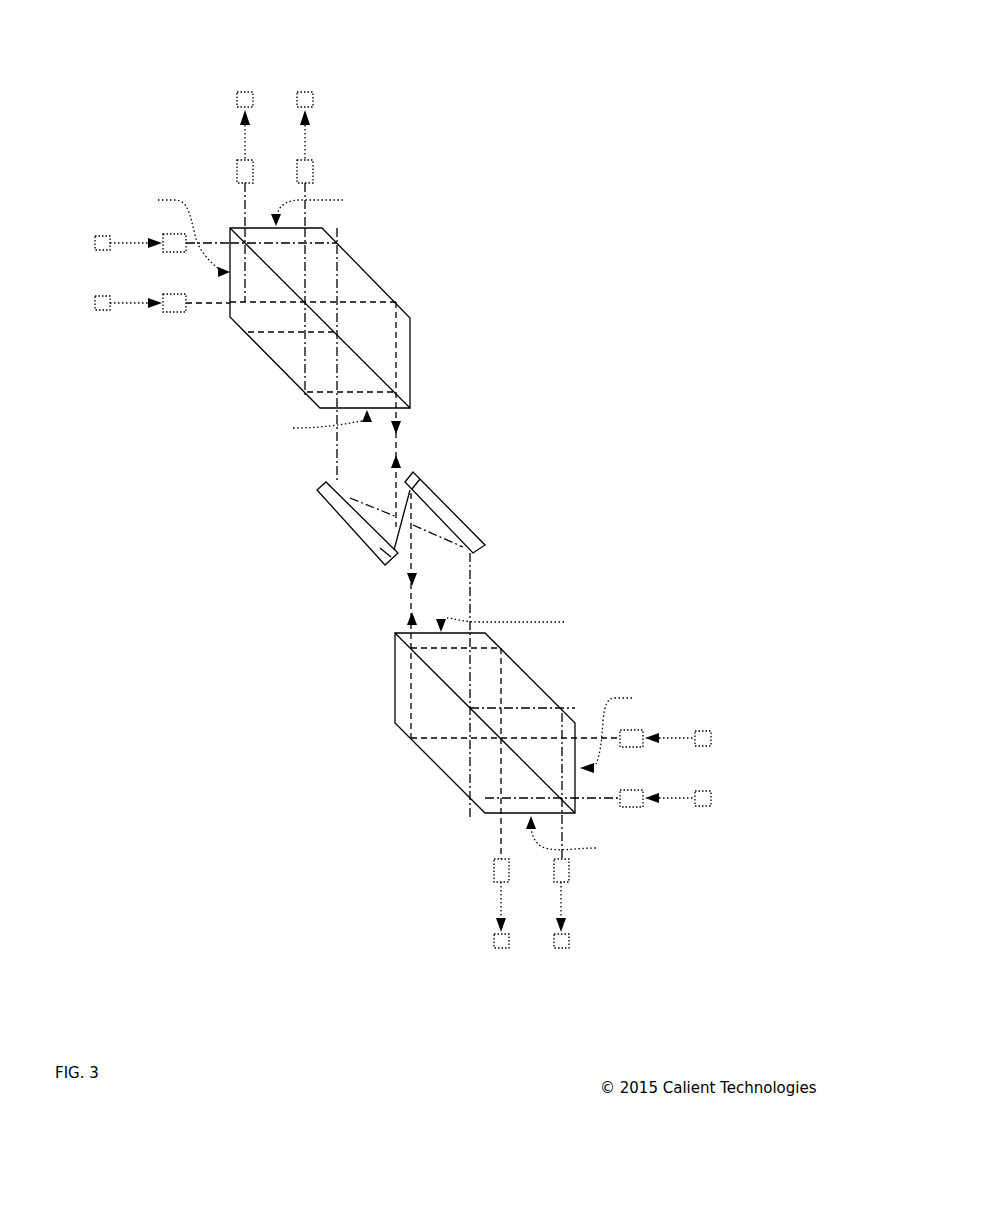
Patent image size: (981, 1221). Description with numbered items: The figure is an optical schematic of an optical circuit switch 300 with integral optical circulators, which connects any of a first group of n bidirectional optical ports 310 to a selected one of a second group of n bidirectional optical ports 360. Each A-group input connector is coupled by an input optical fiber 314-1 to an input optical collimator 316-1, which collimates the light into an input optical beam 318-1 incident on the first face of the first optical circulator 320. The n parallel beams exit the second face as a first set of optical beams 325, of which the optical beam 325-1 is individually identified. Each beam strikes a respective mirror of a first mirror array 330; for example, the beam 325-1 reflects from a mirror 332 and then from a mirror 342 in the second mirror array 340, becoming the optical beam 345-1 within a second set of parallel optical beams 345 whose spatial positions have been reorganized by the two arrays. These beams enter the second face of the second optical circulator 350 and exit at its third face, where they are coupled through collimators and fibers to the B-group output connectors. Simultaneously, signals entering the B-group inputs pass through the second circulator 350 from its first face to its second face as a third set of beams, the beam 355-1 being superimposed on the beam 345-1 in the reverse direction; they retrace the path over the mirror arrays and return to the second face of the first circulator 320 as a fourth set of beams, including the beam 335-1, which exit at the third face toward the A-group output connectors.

The optical circuit switch 300 is at (688, 68).
The A group of bidirectional optical ports 310 is at (205, 80).
The input optical fiber 314-1 is at (126, 308).
The input optical collimator 316-1 is at (175, 313).
The input optical beam 318-1 is at (218, 306).
The first optical circulator 320 is at (370, 282).
The first set of optical beams 325 is at (298, 458).
The optical beam 325-1 is at (405, 418).
The optical beam 335-1 is at (408, 458).
The first mirror array 330 is at (322, 505).
The mirror 332 is at (375, 566).
The second mirror array 340 is at (470, 527).
The mirror 342 is at (420, 478).
The second set of optical beams 345 is at (514, 577).
The optical beam 345-1 is at (405, 582).
The optical beam 355-1 is at (405, 618).
The second optical circulator 350 is at (530, 681).
The B group of bidirectional optical ports 360 is at (626, 971).